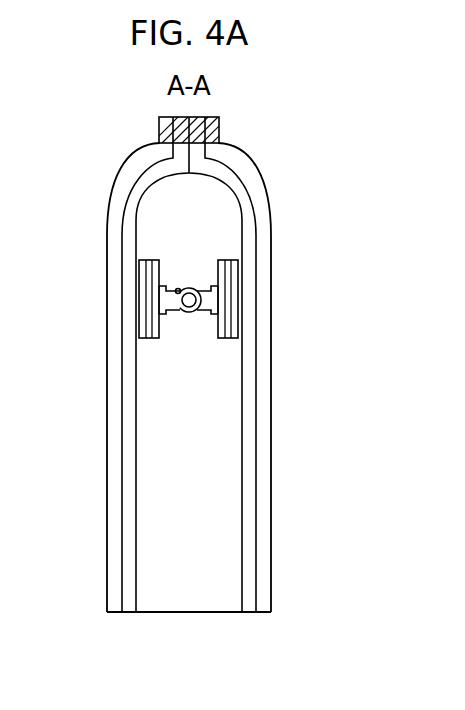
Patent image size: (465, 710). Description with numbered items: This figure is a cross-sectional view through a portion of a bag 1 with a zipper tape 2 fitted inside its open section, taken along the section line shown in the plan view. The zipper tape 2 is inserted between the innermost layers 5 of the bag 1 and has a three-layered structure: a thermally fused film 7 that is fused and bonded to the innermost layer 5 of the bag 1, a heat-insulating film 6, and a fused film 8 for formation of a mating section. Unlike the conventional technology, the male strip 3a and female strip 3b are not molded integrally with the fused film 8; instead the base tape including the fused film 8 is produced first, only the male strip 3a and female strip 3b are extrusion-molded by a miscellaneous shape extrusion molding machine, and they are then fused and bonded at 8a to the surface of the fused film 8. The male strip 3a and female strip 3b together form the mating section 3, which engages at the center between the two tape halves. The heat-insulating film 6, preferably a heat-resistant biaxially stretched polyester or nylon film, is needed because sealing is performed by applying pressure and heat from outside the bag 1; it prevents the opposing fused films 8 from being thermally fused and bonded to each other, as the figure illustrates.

The bag 1 is at (153, 512).
The zipper tape 2 is at (209, 296).
The mating section 3 is at (186, 288).
The male strip 3a is at (160, 284).
The female strip 3b is at (218, 286).
The innermost layer 5 is at (130, 433).
The heat-insulating film 6 is at (145, 318).
The thermally fused film 7 is at (142, 333).
The fused film for formation of a mating section 8 is at (153, 312).
The fused and bonded portion 8a is at (160, 295).